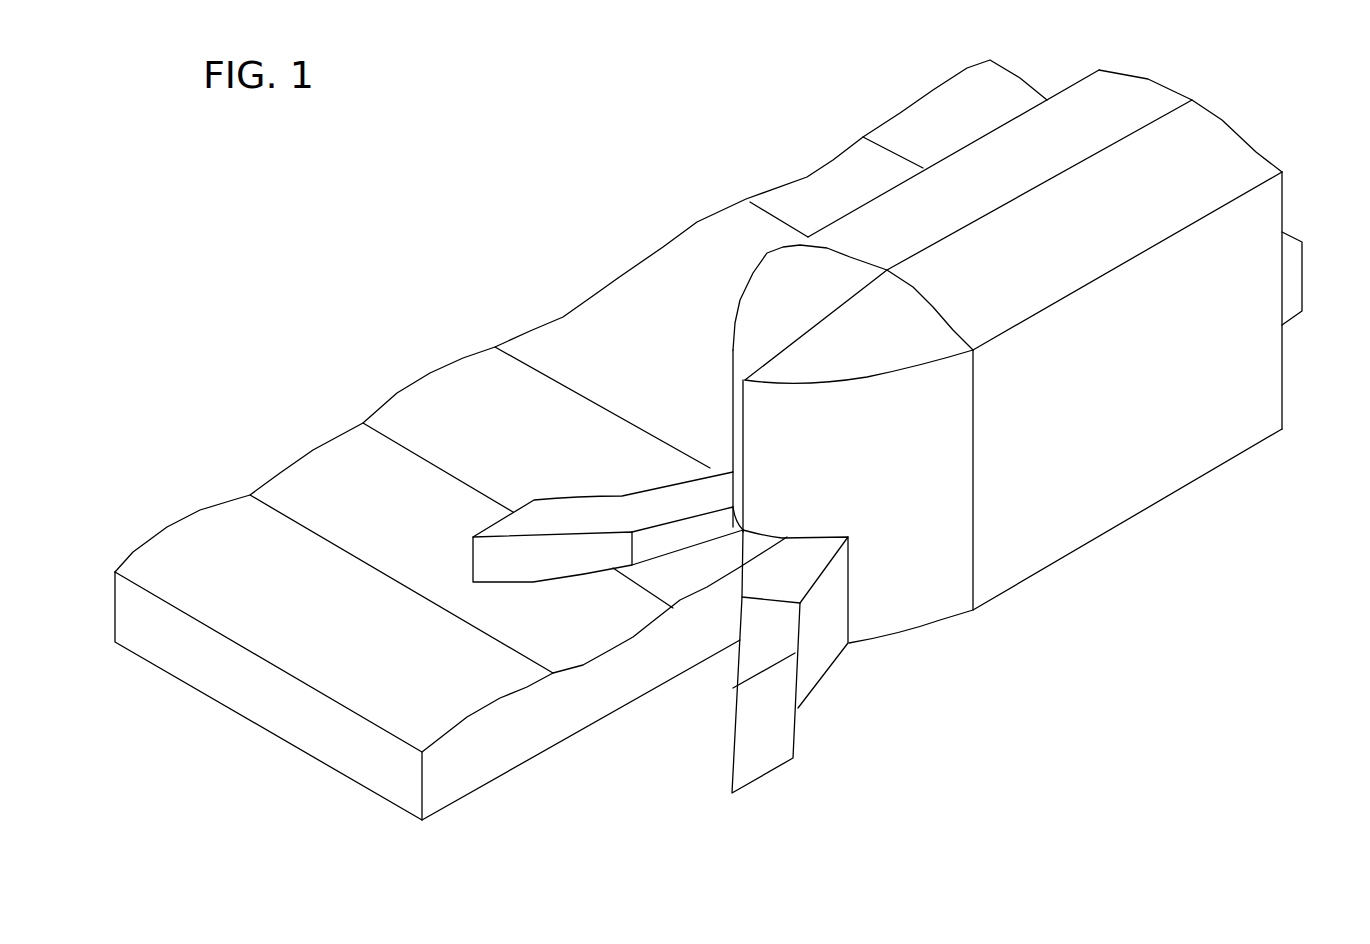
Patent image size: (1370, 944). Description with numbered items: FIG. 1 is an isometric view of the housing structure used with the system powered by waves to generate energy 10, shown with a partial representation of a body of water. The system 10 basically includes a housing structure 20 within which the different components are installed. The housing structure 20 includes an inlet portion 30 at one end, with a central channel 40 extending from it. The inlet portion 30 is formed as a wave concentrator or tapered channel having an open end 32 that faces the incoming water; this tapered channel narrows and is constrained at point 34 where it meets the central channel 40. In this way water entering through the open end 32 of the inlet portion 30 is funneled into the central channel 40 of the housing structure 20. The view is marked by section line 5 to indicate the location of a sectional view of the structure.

The section line 5- 5 is at (1298, 212).
The system powered by waves to generate energy 10 is at (1128, 598).
The housing structure 20 is at (1212, 437).
The inlet portion 30 is at (595, 512).
The open end 32 is at (533, 523).
The point 34 is at (733, 506).
The central channel 40 is at (738, 545).